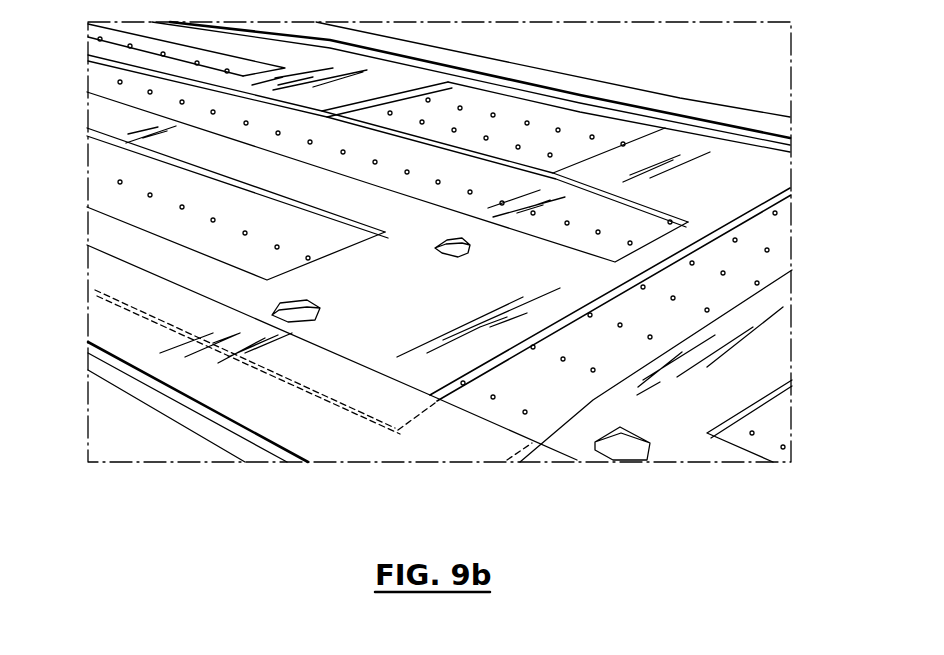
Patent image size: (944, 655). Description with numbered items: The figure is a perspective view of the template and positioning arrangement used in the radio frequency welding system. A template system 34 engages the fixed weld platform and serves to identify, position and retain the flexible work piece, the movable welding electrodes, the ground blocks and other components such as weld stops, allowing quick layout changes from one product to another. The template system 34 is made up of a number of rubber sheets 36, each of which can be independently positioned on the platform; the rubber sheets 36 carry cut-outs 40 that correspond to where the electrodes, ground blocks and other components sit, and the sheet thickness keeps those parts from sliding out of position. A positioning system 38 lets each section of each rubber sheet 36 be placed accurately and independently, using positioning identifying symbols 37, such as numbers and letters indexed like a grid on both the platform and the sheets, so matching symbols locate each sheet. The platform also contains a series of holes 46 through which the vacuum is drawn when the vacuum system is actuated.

The template system 34 is at (722, 163).
The rubber sheets 36 is at (363, 343).
The positioning identifying symbols 37 is at (416, 372).
The positioning system 38 is at (497, 410).
The cut-outs 40 is at (275, 313).
The series of holes 46 is at (563, 357).